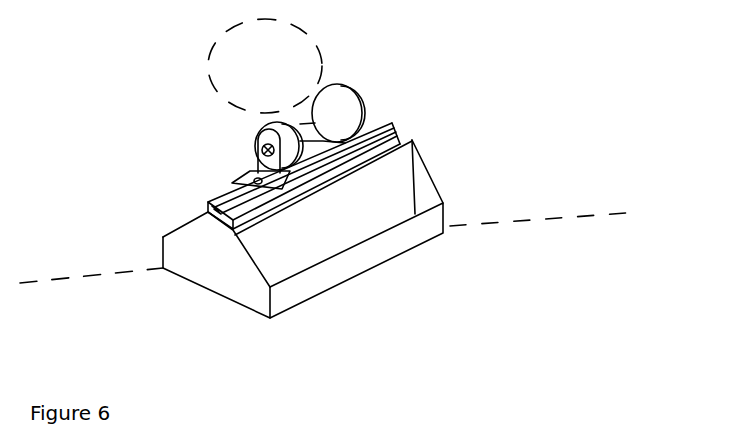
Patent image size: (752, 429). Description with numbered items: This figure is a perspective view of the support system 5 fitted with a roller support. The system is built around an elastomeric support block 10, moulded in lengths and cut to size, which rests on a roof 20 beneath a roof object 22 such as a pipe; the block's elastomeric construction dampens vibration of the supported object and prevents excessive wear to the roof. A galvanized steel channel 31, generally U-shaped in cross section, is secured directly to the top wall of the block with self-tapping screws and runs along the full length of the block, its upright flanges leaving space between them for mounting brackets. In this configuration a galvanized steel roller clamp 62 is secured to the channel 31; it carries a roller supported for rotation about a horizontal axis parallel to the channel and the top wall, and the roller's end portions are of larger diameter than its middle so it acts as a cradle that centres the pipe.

The support system 5 is at (182, 168).
The support block 10 is at (356, 214).
The roof 20 is at (555, 222).
The roof object 22 is at (223, 31).
The galvanized steel channel 31 is at (393, 135).
The roller clamp 62 is at (333, 110).